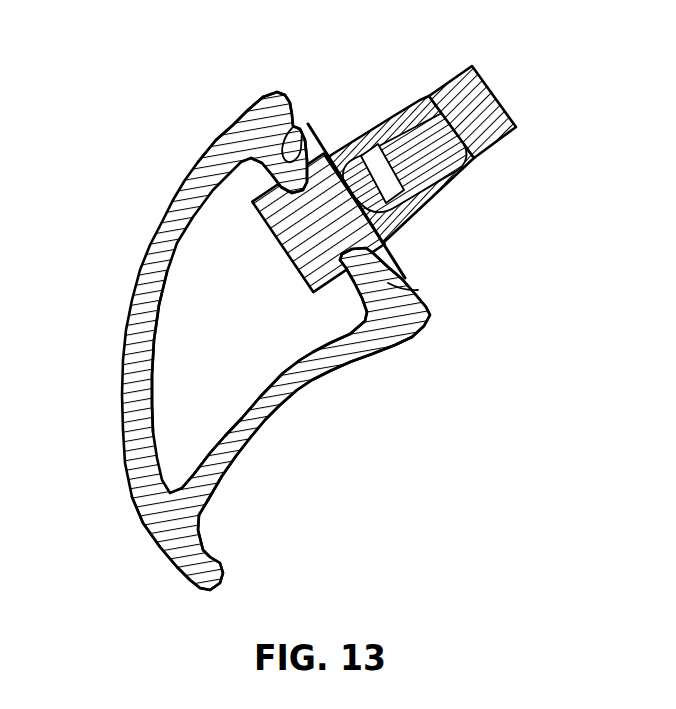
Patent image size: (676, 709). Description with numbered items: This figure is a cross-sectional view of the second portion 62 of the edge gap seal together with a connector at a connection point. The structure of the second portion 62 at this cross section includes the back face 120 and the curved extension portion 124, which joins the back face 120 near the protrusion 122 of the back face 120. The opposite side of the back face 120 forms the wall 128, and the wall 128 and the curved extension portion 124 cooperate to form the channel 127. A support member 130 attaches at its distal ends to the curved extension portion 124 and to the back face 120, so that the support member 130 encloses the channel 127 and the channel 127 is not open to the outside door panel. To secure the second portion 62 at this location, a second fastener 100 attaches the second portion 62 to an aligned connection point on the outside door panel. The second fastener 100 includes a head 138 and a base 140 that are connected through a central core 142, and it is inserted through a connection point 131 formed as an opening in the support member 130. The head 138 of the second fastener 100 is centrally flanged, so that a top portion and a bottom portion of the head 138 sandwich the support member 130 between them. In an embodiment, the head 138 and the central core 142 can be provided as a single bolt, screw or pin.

The second portion 62 is at (198, 162).
The second fastener 100 is at (411, 167).
The back face 120 is at (286, 332).
The protrusion 122 is at (192, 581).
The curved extension portion 124 is at (275, 411).
The channel 127 is at (248, 302).
The wall 128 is at (154, 351).
The support member 130 is at (261, 97).
The connection point 131 is at (300, 133).
The head 138 is at (313, 142).
The base 140 is at (502, 99).
The central core 142 is at (434, 168).